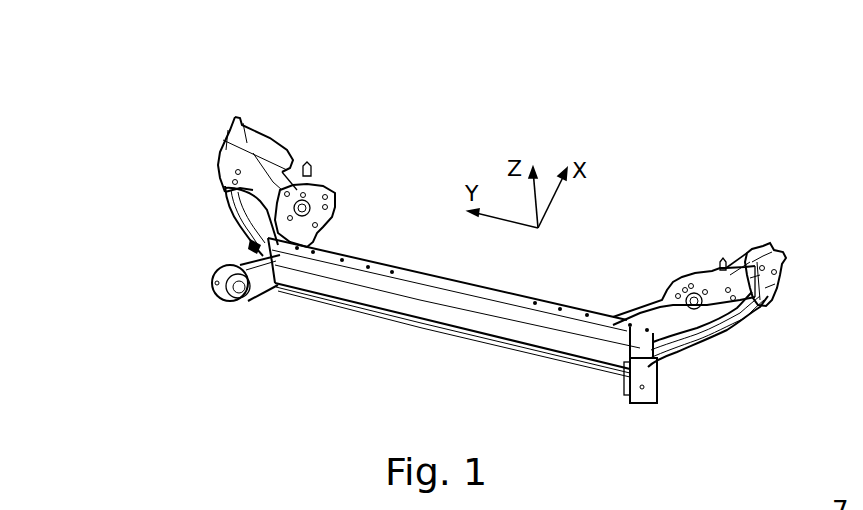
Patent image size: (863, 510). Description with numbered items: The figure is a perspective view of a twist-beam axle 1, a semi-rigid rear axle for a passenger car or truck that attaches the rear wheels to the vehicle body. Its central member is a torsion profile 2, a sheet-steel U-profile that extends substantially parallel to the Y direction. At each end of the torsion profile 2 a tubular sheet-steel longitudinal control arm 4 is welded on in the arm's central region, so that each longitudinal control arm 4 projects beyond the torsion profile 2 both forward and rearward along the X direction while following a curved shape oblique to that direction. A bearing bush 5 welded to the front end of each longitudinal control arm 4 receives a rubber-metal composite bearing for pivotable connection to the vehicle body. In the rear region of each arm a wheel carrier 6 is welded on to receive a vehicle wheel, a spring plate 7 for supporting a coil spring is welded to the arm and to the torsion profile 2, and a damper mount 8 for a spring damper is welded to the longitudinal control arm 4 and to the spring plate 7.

The twist-beam axle 1 is at (462, 142).
The torsion profile 2 is at (427, 327).
The longitudinal control arm 4 is at (227, 207).
The bearing bush 5 is at (210, 292).
The wheel carrier 6 is at (223, 137).
The spring plate 7 is at (327, 187).
The damper mount 8 is at (307, 170).